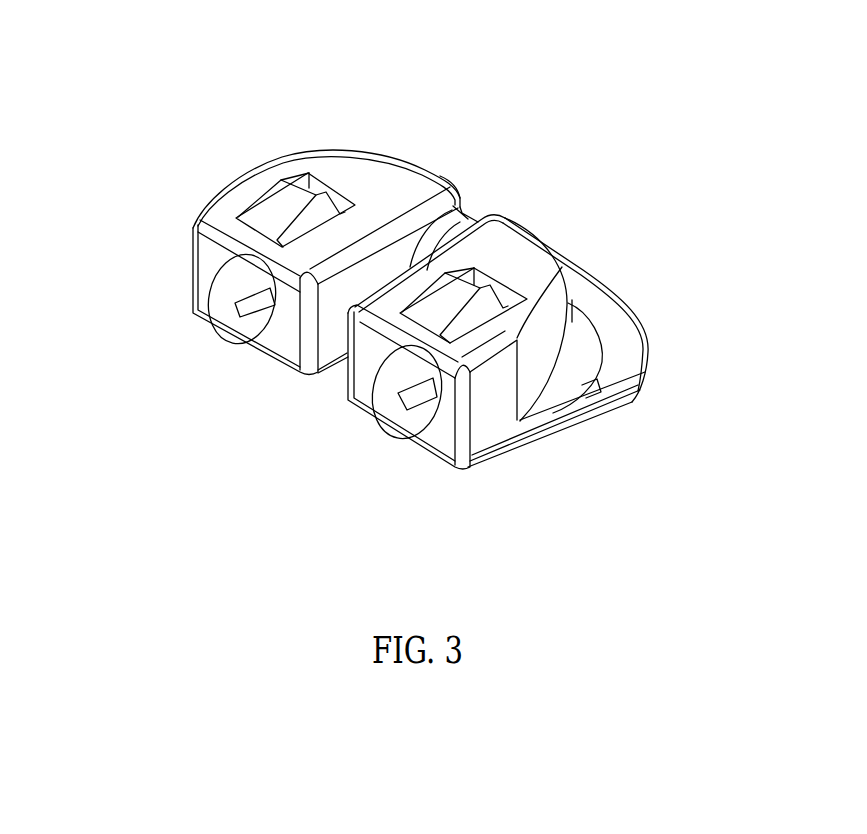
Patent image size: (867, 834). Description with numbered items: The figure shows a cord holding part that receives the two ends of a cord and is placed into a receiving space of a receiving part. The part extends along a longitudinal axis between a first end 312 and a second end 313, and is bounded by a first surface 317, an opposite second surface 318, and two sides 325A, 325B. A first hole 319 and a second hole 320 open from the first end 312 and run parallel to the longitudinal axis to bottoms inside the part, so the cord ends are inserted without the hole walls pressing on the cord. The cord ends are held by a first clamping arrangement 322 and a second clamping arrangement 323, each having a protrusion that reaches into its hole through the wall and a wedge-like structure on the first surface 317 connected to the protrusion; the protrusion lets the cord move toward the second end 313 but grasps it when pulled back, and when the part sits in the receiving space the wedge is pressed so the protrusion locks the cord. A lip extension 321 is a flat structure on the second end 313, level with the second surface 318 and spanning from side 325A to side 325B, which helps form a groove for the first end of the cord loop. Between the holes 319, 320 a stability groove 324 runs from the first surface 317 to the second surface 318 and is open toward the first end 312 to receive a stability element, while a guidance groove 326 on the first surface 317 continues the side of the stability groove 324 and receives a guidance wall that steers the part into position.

The first end of the cord holding part 312 is at (210, 248).
The second end of the cord holding part 313 is at (442, 172).
The first surface 317 is at (373, 180).
The second surface 318 is at (503, 458).
The first hole 319 is at (422, 420).
The second hole 320 is at (233, 282).
The lip extension 321 is at (603, 313).
The first clamping arrangement 322 is at (446, 298).
The second clamping arrangement 323 is at (281, 205).
The stability groove 324 is at (337, 322).
The side of the cord holding part 325A is at (495, 405).
The side of the cord holding part 325B is at (221, 190).
The guidance groove 326 is at (470, 218).